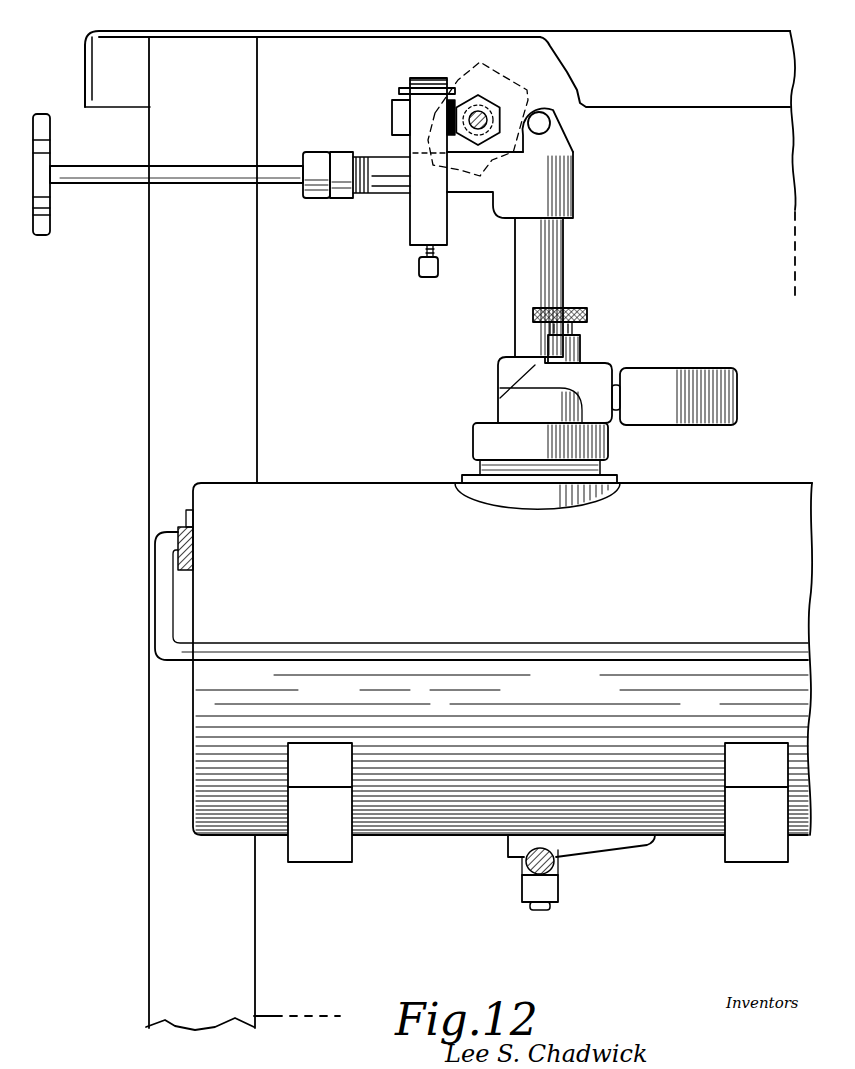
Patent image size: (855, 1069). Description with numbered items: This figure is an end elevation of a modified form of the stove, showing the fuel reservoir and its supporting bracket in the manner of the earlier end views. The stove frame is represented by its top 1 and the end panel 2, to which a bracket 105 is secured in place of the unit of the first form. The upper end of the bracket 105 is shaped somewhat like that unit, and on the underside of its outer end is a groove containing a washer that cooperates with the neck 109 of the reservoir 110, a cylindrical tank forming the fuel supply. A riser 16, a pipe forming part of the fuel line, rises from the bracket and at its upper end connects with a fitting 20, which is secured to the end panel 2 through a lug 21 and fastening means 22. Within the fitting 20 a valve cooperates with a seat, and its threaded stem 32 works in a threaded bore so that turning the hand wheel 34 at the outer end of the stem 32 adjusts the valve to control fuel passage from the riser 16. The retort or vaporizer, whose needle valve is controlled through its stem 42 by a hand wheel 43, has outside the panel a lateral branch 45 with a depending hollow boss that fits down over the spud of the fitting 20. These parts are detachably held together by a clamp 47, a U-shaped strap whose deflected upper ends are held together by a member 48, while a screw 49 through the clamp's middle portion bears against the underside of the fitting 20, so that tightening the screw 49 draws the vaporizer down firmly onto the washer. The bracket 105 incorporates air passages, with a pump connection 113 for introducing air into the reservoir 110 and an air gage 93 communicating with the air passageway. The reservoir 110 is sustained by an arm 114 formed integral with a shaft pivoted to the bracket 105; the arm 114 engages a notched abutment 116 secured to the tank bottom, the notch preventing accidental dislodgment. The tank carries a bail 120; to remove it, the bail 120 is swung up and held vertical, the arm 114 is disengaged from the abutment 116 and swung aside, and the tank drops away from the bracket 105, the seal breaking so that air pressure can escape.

The top 1 is at (518, 32).
The end panel 2 is at (248, 533).
The riser 16 is at (550, 253).
The fitting 20 is at (564, 190).
The lug 21 is at (558, 147).
The fastening means 22 is at (548, 105).
The valve stem 32 is at (227, 184).
The hand wheel 34 is at (51, 218).
The stem 42 is at (487, 110).
The hand wheel 43 is at (462, 76).
The lateral branch 45 is at (392, 118).
The clamp 47 is at (410, 216).
The member 48 is at (405, 92).
The screw 49 is at (419, 266).
The air gage 93 is at (674, 396).
The bracket 105 is at (505, 404).
The neck 109 is at (475, 462).
The reservoir 110 is at (502, 672).
The pump connection 113 is at (580, 309).
The arm 114 is at (556, 863).
The abutment 116 is at (515, 843).
The bail 120 is at (418, 641).